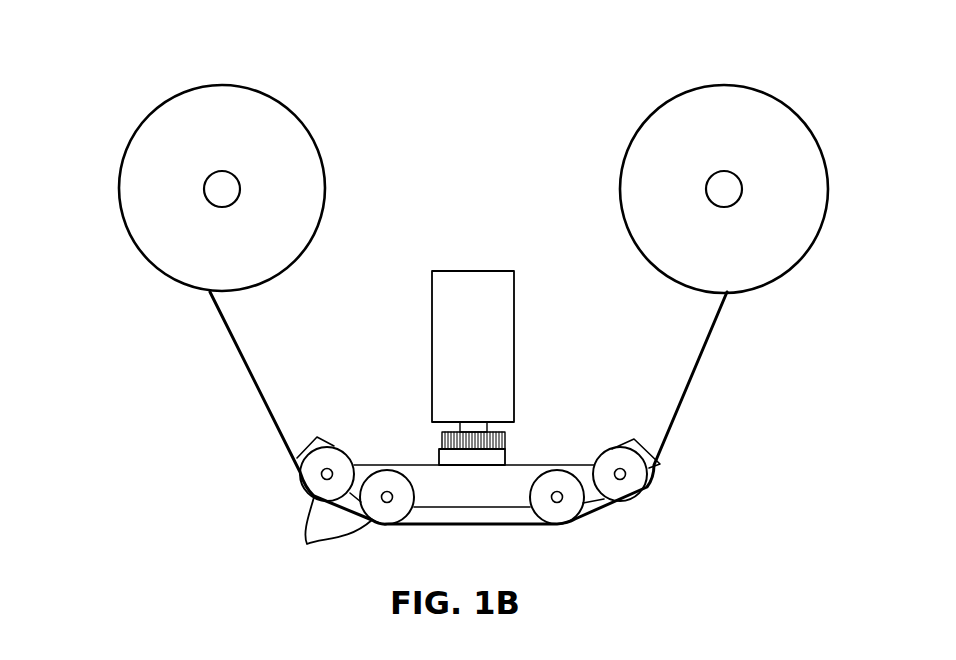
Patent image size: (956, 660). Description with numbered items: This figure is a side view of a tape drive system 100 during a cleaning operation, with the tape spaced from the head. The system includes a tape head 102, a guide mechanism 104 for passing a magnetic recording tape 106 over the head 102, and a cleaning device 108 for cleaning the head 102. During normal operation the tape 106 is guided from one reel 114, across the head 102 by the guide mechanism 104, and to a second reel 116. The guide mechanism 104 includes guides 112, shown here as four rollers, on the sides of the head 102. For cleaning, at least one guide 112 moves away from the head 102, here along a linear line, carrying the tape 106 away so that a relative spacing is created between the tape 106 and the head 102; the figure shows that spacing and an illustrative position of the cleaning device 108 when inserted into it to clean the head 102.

The tape drive system 100 is at (82, 122).
The tape head 102 is at (512, 298).
The guide mechanism 104 is at (700, 486).
The magnetic recording tape 106 is at (247, 372).
The cleaning device 108 is at (503, 457).
The guide 112 is at (330, 540).
The reel 114 is at (318, 152).
The second reel 116 is at (623, 150).